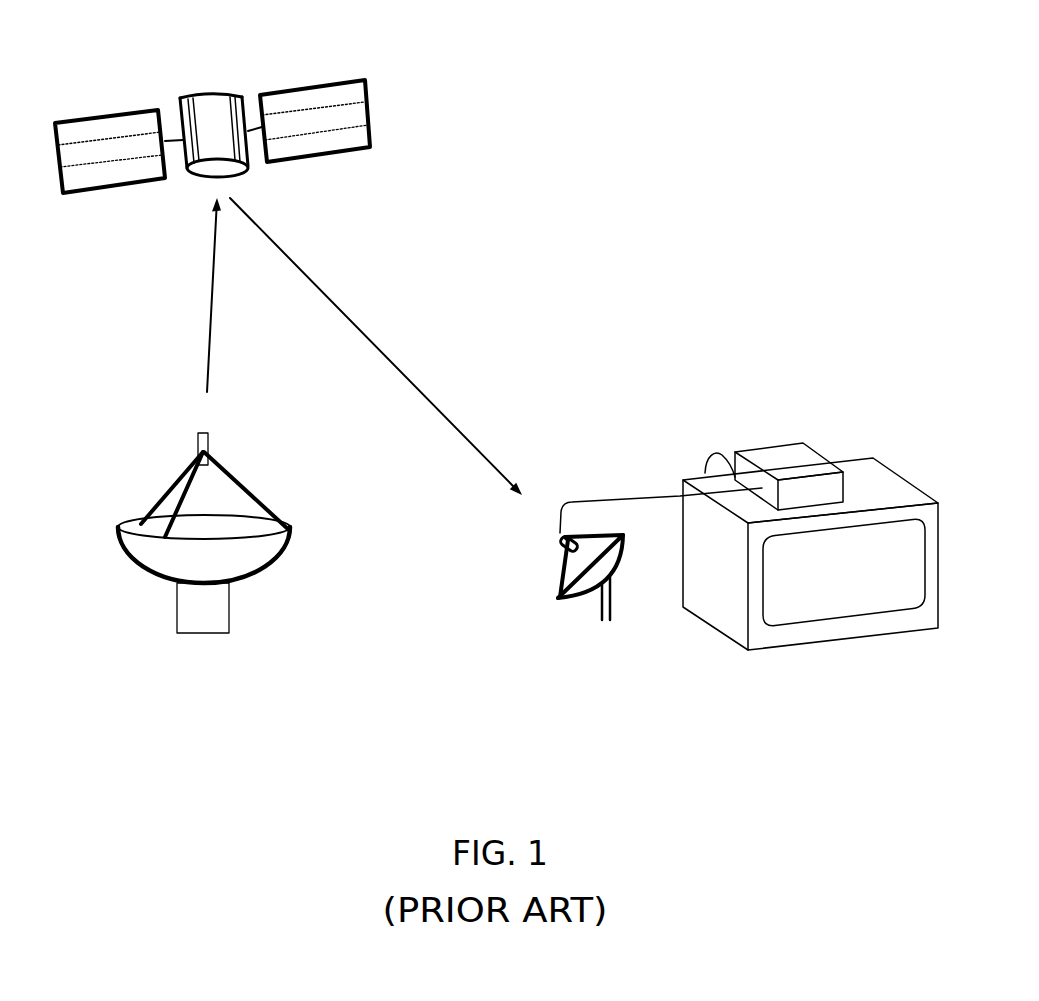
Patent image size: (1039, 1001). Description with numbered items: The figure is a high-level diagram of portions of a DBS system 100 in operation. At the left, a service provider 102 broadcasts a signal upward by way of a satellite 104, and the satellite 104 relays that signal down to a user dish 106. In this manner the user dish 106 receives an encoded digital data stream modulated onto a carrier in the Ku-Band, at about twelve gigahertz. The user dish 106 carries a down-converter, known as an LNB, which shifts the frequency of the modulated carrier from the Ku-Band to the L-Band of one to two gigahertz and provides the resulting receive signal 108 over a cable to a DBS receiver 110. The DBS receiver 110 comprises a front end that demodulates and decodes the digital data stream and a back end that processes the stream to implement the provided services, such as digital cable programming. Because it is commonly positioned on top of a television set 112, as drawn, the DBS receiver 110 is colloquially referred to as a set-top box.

The DBS system 100 is at (728, 170).
The service provider 102 is at (163, 578).
The satellite 104 is at (192, 100).
The user dish 106 is at (567, 580).
The receive signal 108 is at (625, 495).
The DBS receiver 110 is at (772, 443).
The television set 112 is at (938, 533).